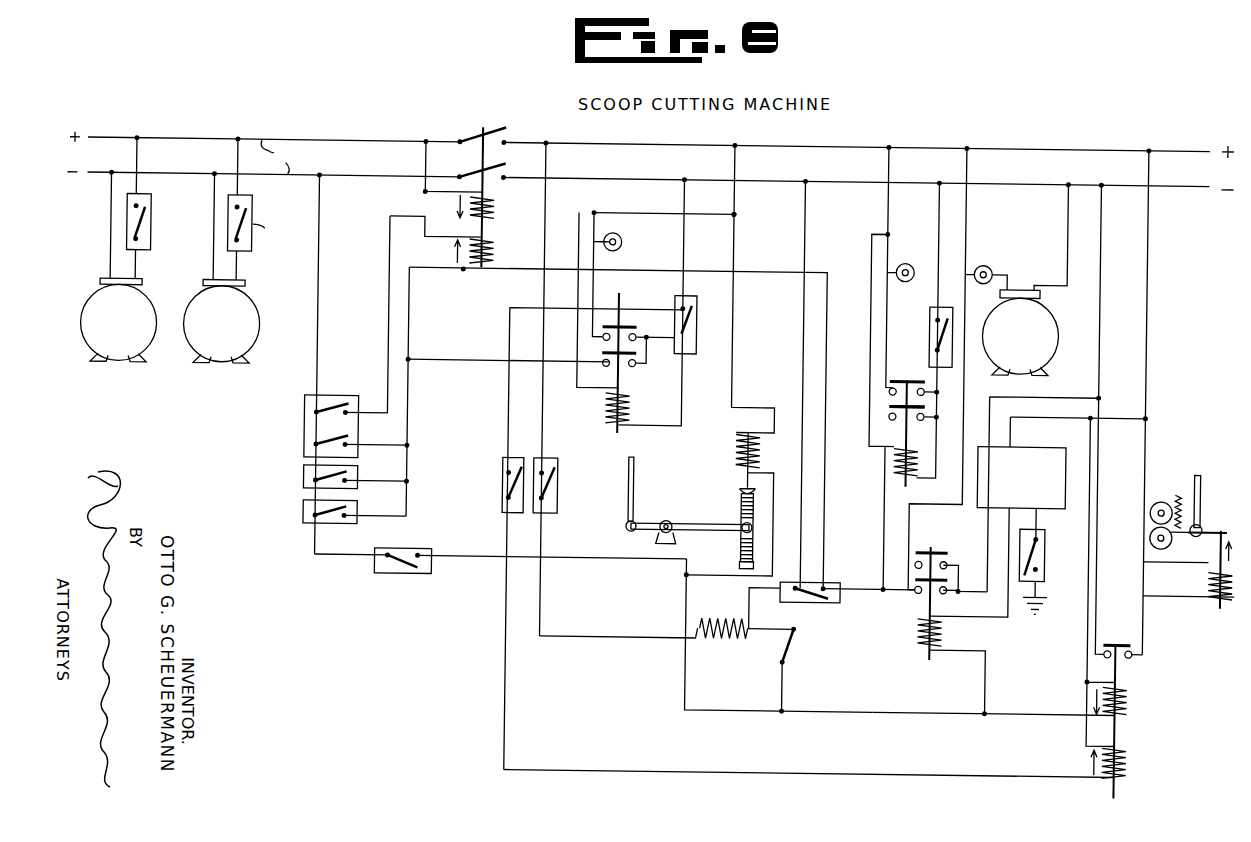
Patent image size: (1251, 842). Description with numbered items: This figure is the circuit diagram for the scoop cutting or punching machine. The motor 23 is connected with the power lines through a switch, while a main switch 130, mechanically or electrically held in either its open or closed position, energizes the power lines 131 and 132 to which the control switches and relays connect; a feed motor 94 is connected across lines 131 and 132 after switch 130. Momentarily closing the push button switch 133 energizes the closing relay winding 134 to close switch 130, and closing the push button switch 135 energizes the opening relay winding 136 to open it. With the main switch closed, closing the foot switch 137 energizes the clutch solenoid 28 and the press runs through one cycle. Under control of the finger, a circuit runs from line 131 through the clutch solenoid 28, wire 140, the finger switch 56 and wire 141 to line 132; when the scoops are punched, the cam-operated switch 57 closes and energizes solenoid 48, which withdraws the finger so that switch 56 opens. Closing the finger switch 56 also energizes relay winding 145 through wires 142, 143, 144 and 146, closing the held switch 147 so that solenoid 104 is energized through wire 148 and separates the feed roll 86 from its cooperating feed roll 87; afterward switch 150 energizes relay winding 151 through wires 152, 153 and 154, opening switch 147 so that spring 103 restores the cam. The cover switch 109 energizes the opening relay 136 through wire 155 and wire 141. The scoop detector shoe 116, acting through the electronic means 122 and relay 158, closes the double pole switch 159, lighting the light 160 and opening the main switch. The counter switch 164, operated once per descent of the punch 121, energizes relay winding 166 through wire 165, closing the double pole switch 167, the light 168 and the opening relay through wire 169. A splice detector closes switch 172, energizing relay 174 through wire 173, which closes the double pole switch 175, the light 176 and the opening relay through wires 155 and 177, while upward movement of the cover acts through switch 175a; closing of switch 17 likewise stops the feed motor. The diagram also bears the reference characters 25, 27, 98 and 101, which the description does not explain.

The switch 17 is at (337, 520).
The motor 23 is at (262, 309).
The stop 25 is at (642, 460).
The lever 27 is at (690, 518).
The clutch solenoid 28 is at (738, 448).
The solenoid 48 is at (730, 633).
The finger switch 56 is at (798, 644).
The switch 57 is at (561, 485).
The tape feed roll 86 is at (1155, 499).
The cooperating feed roll 87 is at (1155, 525).
The feed motor 94 is at (1013, 333).
The pivot 98 is at (1200, 522).
The lever 101 is at (1204, 462).
The spring 103 is at (1184, 480).
The solenoid 104 is at (1228, 598).
The cover switch 109 is at (830, 577).
The shoe 116 is at (1050, 542).
The punch 121 is at (1044, 508).
The electronic means 122 is at (1032, 436).
The main switch 130 is at (482, 161).
The power line 131 is at (812, 136).
The power line 132 is at (818, 171).
The push button switch 133 is at (332, 392).
The closing relay winding 134 is at (487, 201).
The push button switch 135 is at (352, 433).
The opening relay winding 136 is at (487, 243).
The foot switch 137 is at (414, 544).
The wire 140 is at (692, 686).
The wire 141 is at (802, 377).
The wire 142 is at (1150, 287).
The wire 143 is at (1130, 404).
The wire 144 is at (1092, 622).
The relay winding 145 is at (1138, 678).
The wire 146 is at (898, 707).
The switch 147 is at (1112, 631).
The wire 148 is at (1100, 328).
The switch 150 is at (506, 483).
The relay winding 151 is at (1140, 747).
The wire 152 is at (846, 764).
The wire 153 is at (511, 408).
The wire 154 is at (686, 239).
The wire 155 is at (820, 262).
The relay 158 is at (950, 620).
The double pole switch 159 is at (936, 537).
The light 160 is at (998, 259).
The counter switch 164 is at (692, 349).
The wire 165 is at (656, 207).
The relay winding 166 is at (608, 409).
The double pole switch 167 is at (621, 305).
The light 168 is at (623, 233).
The wire 169 is at (478, 355).
The switch 172 is at (931, 326).
The wire 173 is at (872, 333).
The relay 174 is at (898, 456).
The double pole switch 175 is at (913, 370).
The switch 175a is at (894, 396).
The light 176 is at (916, 255).
The wire 177 is at (887, 491).